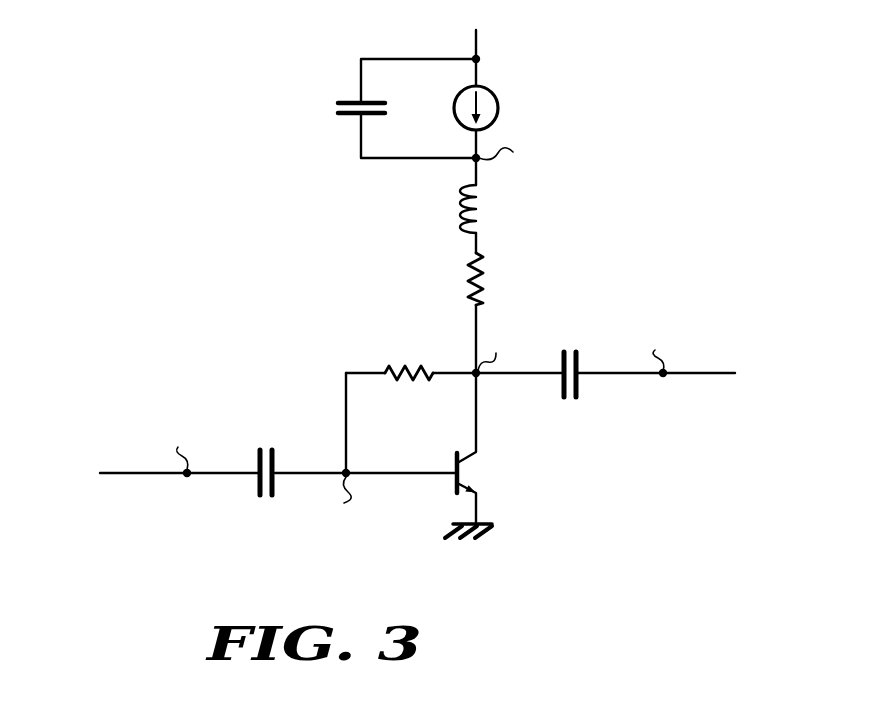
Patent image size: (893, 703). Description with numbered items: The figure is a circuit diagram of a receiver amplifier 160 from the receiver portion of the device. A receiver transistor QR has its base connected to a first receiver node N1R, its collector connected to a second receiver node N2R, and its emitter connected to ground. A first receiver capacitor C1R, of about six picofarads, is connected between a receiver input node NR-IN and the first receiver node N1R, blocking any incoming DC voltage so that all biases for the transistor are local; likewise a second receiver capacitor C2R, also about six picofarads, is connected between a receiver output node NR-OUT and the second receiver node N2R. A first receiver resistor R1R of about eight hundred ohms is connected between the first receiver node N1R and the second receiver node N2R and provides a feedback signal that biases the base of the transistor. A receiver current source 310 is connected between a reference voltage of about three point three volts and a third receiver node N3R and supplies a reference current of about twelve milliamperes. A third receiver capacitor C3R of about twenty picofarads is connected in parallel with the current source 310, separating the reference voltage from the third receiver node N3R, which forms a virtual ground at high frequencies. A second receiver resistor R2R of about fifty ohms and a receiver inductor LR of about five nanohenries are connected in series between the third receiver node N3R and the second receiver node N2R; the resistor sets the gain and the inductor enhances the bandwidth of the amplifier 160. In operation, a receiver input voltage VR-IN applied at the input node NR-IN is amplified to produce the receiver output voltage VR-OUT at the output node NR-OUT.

The receiver current source 310 is at (497, 94).
The receiver amplifier 160 is at (421, 301).
The third receiver capacitor C3R is at (340, 107).
The third receiver node N3R is at (512, 159).
The receiver inductor LR is at (486, 209).
The second receiver resistor R2R is at (497, 279).
The second receiver node N2R is at (503, 349).
The first receiver resistor R1R is at (409, 394).
The receiver transistor QR is at (481, 448).
The first receiver node N1R is at (350, 503).
The first receiver capacitor C1R is at (275, 493).
The second receiver capacitor C2R is at (571, 392).
The receiver input node NR-IN is at (186, 444).
The receiver output node NR-OUT is at (662, 344).
The receiver input voltage VR-IN is at (143, 475).
The receiver output voltage VR-OUT is at (779, 381).